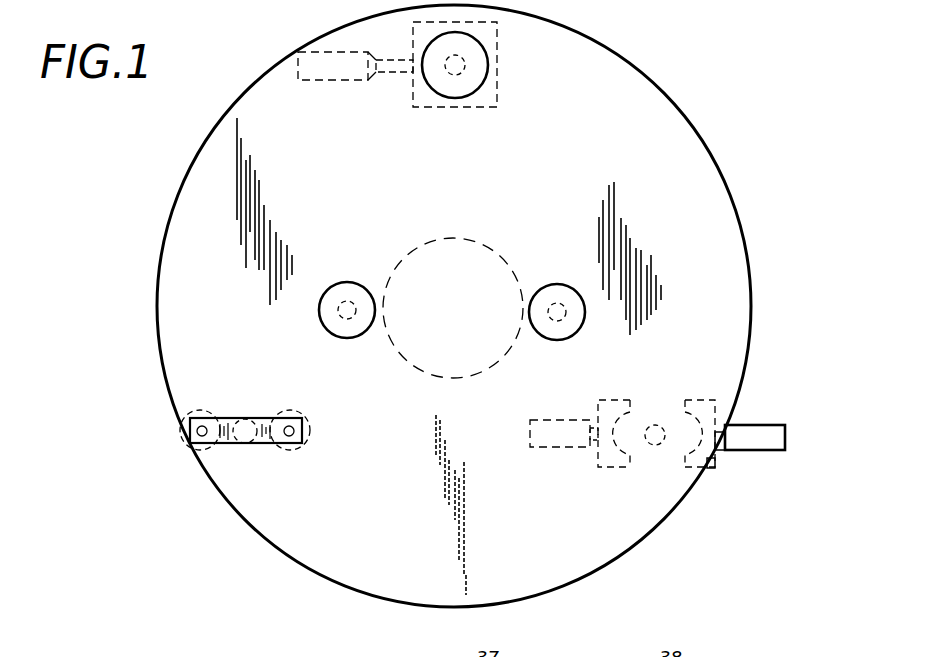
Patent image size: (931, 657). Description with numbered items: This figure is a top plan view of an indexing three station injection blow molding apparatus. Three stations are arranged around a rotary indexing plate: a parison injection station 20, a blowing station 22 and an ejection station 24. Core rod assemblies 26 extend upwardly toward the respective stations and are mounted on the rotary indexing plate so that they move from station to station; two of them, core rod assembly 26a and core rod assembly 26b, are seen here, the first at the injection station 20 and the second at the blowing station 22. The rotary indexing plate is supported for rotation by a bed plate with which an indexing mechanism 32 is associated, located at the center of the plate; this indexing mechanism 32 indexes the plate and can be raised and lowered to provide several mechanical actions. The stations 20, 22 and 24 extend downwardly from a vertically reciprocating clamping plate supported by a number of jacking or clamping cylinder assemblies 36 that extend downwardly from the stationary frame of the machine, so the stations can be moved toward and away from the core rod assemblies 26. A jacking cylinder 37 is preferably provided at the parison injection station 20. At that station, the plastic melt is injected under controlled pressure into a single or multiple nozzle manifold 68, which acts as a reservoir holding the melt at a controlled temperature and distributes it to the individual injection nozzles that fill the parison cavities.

The parison injection station 20 is at (491, 108).
The blowing station 22 is at (653, 411).
The ejection station 24 is at (246, 419).
The core rod assemblies 26 is at (256, 445).
The core rod assembly 26a is at (463, 68).
The core rod assembly 26b is at (656, 446).
The indexing mechanism 32 is at (505, 218).
The jacking or clamping cylinder assemblies 36 is at (352, 284).
The jacking cylinder 37 is at (452, 98).
The nozzle manifold 68 is at (355, 82).